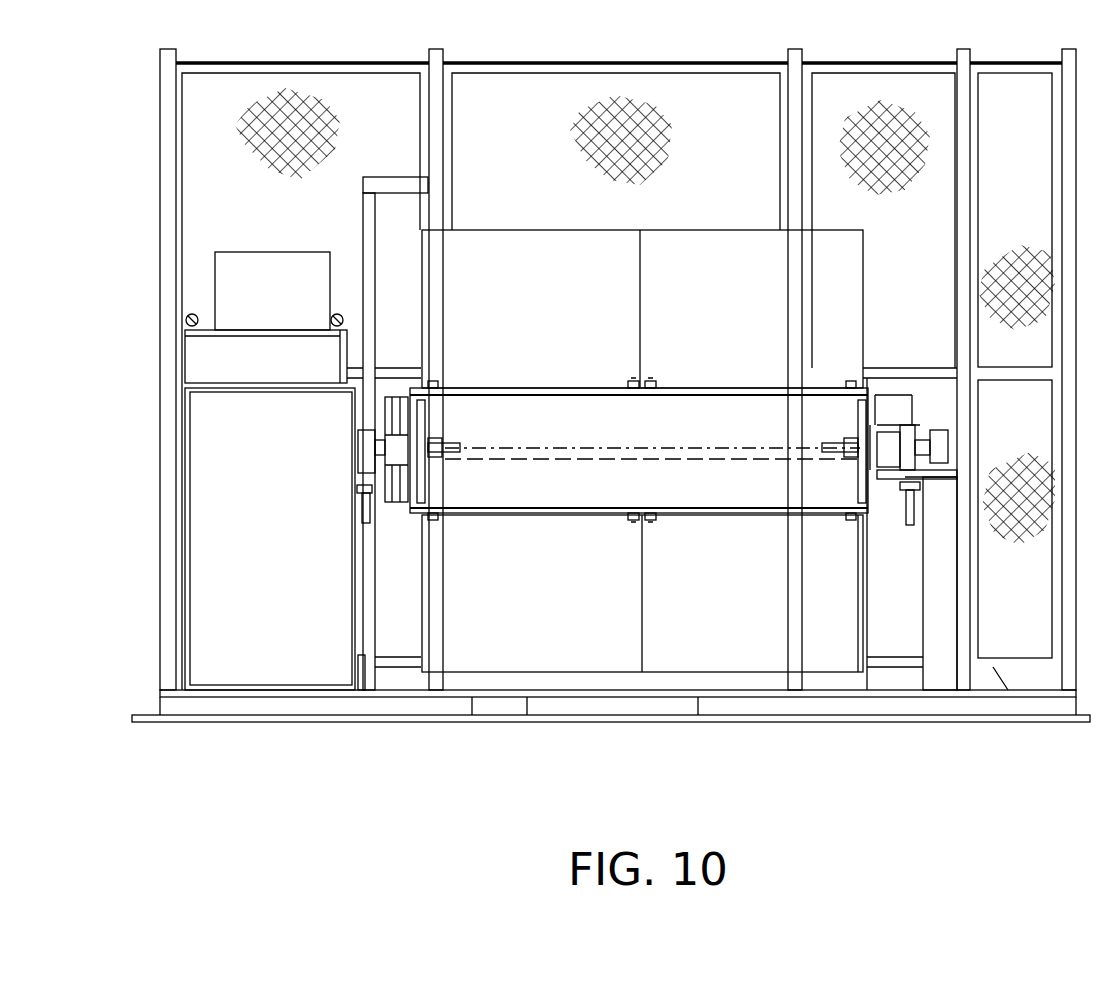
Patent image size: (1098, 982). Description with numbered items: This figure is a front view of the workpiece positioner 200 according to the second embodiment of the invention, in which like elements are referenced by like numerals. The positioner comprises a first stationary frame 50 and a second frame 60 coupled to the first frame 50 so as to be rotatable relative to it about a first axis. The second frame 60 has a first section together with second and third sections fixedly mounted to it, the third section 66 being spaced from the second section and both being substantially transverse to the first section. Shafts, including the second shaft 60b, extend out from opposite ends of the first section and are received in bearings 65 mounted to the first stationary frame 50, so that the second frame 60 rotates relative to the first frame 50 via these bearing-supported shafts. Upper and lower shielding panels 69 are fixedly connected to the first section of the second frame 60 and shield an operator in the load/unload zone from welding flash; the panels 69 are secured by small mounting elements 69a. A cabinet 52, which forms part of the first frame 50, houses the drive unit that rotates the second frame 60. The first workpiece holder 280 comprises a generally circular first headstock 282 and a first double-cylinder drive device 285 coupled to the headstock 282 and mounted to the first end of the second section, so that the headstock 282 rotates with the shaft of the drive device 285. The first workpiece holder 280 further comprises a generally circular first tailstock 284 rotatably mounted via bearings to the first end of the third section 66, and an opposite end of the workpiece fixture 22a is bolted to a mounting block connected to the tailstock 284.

The workpiece positioner 200 is at (912, 284).
The cabinet 52 is at (213, 660).
The first stationary frame 50 is at (307, 660).
The first double-cylinder drive device 285 is at (405, 515).
The first workpiece holder 280 is at (420, 425).
The first headstock 282 is at (420, 490).
The first tailstock 284 is at (860, 485).
The workpiece fixture 22a is at (620, 460).
The shielding panels 69 is at (560, 238).
The mounting bracket 69a is at (672, 540).
The second frame 60 is at (875, 440).
The second shaft 60b is at (912, 392).
The bearings 65 is at (948, 445).
The third section 66 is at (903, 482).